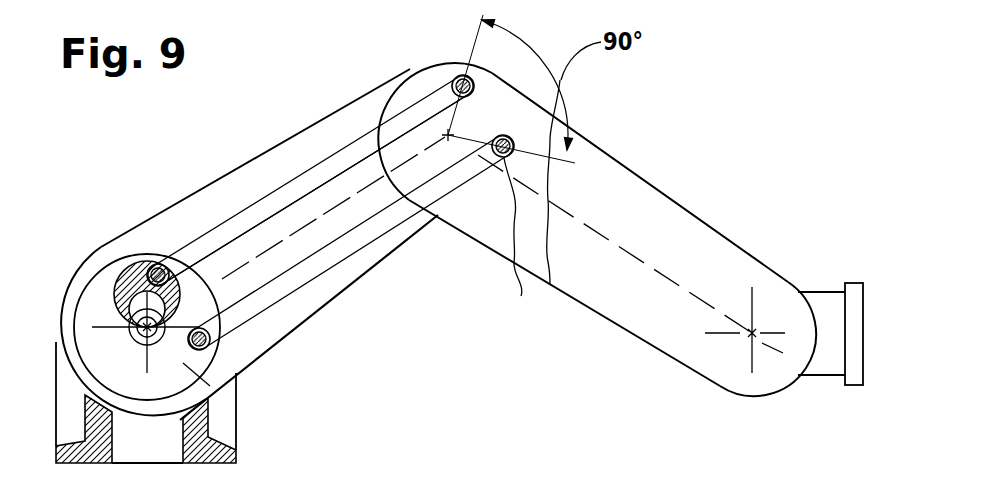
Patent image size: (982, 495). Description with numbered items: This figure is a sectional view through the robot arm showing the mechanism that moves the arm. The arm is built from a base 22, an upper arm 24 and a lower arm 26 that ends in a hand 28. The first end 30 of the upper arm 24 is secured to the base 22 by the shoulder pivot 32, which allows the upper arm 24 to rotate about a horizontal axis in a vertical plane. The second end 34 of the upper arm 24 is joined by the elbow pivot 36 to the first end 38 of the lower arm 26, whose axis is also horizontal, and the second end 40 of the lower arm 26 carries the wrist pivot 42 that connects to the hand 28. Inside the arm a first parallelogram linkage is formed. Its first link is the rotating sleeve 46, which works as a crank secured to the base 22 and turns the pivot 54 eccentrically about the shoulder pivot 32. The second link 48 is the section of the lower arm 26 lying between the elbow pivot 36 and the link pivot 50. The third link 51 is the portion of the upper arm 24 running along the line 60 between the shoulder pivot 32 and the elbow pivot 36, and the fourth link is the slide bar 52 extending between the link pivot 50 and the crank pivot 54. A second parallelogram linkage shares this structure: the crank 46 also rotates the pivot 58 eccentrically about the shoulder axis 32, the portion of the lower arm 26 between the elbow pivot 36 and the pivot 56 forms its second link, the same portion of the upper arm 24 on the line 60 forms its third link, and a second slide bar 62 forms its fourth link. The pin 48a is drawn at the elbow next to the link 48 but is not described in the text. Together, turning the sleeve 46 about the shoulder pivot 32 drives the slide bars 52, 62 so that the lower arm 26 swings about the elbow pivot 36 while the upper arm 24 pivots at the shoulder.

The base 22 is at (236, 458).
The upper arm 24 is at (343, 103).
The lower arm 26 is at (645, 181).
The hand 28 is at (821, 291).
The first end of the upper arm 30 is at (84, 262).
The shoulder pivot 32 is at (128, 300).
The second end of the upper arm 34 is at (402, 250).
The elbow pivot 36 is at (433, 152).
The first end of the lower arm 38 is at (453, 60).
The second end of the lower arm 40 is at (763, 396).
The wrist pivot 42 is at (750, 336).
The rotating sleeve 46 is at (190, 372).
The second link 48 is at (473, 106).
The pin 48a is at (481, 133).
The link pivot 50 is at (442, 72).
The third link 51 is at (326, 214).
The slide bar 52 is at (343, 156).
The crank pivot 54 is at (155, 264).
The pivot 56 is at (526, 199).
The pivot 58 is at (212, 347).
The line 60 is at (272, 303).
The slide bar 62 is at (360, 228).